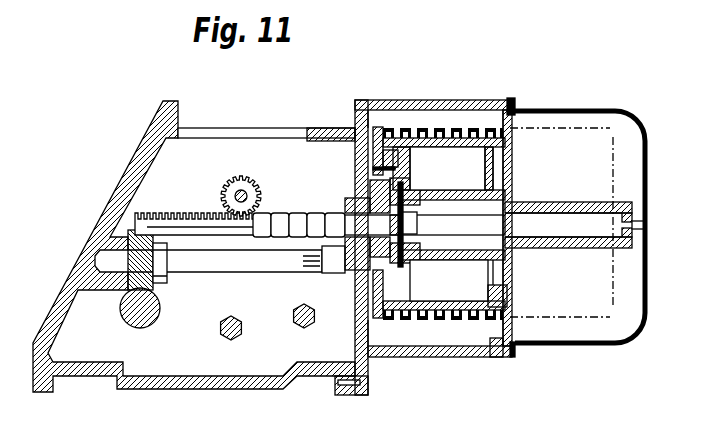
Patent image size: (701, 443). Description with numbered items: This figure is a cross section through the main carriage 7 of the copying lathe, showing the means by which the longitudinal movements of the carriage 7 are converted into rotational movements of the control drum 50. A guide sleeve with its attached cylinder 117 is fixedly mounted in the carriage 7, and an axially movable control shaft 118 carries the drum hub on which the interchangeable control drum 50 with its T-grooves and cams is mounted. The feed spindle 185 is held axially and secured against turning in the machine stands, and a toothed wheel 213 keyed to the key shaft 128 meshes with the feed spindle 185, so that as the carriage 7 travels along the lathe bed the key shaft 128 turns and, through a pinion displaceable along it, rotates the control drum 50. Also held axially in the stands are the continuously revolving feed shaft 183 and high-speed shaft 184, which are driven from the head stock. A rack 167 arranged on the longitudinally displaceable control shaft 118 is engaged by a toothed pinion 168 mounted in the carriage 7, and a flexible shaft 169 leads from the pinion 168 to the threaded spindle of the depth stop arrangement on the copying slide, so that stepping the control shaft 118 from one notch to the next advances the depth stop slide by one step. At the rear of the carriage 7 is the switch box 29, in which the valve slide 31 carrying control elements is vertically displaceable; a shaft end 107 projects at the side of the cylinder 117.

The main carriage 7 is at (147, 160).
The key shaft 128 is at (190, 258).
The toothed wheel 213 is at (130, 232).
The feed spindle 185 is at (140, 328).
The rack 167 is at (160, 213).
The flexible shaft 169 is at (200, 225).
The toothed pinion 168 is at (242, 193).
The control shaft 118 is at (297, 213).
The control drum 50 is at (455, 132).
The switch box 29 is at (552, 110).
The cylinder 117 is at (567, 201).
The shaft end 107 is at (643, 223).
The valve slide 31 is at (493, 357).
The feed shaft 183 is at (230, 342).
The high-speed shaft 184 is at (295, 330).